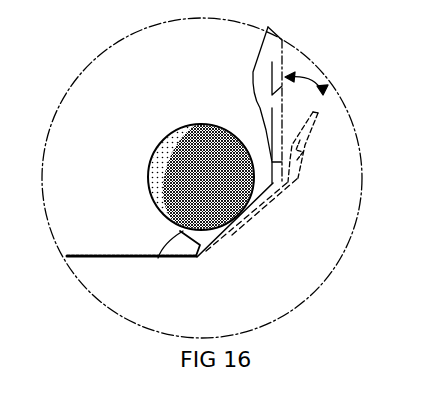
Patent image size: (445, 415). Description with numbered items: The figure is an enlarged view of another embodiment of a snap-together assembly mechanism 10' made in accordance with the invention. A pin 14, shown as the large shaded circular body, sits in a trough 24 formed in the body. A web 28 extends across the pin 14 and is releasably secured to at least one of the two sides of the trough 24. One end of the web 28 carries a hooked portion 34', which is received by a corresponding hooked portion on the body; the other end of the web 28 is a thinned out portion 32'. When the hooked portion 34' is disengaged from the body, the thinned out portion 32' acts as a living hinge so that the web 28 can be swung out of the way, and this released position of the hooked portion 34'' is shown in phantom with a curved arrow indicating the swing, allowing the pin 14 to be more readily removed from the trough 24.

The snap-together assembly mechanism 10' is at (213, 169).
The pin 14 is at (197, 136).
The socket base 24 is at (168, 221).
The mounting plate 28 is at (276, 191).
The thinned out portion 32' is at (163, 268).
The hooked portion 34' is at (290, 91).
The retaining arm in released position 34'' is at (350, 147).